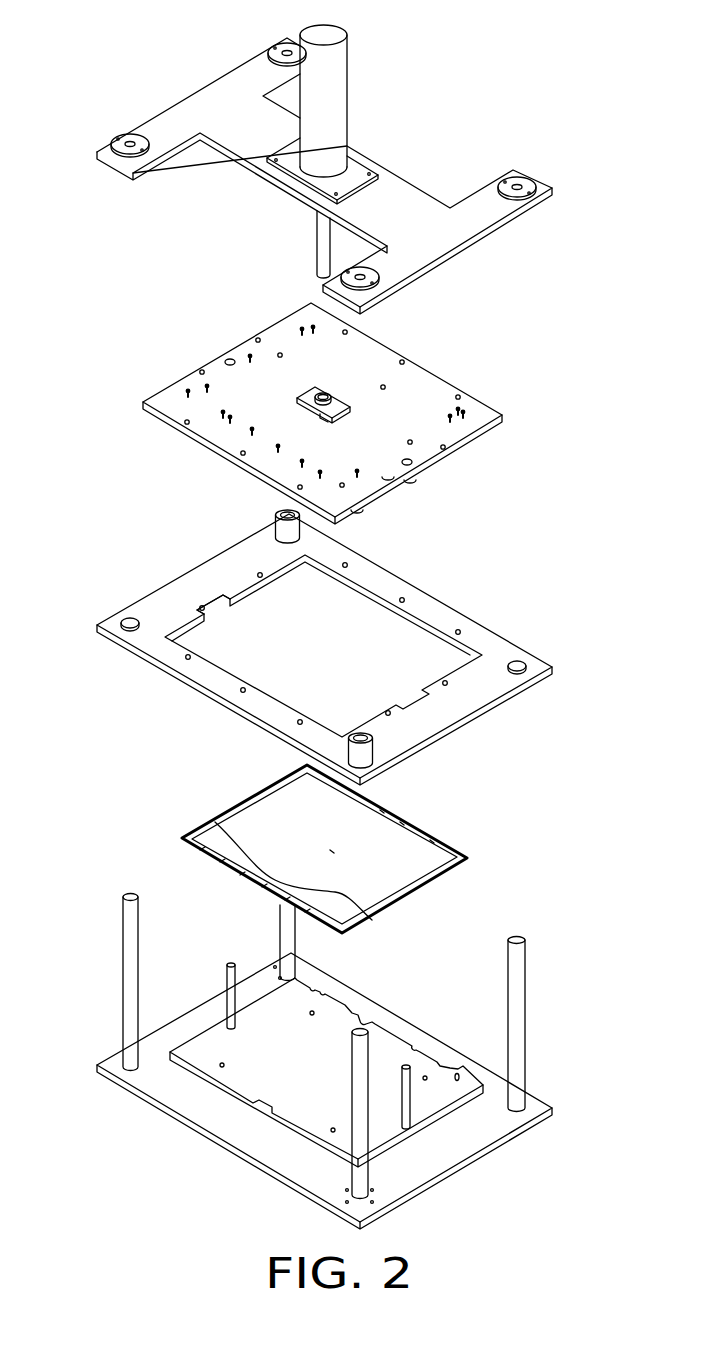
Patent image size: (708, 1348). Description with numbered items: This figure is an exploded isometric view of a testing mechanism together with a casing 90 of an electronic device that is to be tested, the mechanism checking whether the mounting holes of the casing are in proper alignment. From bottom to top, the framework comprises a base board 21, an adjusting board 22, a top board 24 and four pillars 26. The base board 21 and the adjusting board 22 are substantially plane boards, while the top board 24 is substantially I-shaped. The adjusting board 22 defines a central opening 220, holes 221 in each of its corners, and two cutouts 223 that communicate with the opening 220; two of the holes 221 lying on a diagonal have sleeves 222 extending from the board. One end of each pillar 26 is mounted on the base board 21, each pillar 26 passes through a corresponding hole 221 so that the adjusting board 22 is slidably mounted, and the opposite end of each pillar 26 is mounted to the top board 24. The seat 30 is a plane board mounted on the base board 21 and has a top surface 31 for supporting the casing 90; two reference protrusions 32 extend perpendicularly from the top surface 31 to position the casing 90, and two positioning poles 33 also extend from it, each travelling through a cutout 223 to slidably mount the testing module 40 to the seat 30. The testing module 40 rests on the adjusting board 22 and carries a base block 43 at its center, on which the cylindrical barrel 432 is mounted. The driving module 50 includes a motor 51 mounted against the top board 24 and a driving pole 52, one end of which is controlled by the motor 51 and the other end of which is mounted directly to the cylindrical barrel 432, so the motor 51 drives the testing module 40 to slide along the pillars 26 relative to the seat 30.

The base board 21 is at (150, 1077).
The adjusting board 22 is at (284, 625).
The top board 24 is at (203, 110).
The pillars 26 is at (518, 987).
The seat 30 is at (343, 1096).
The top surface 31 is at (298, 1117).
The reference protrusions 32 is at (457, 1077).
The positioning poles 33 is at (405, 1097).
The testing module 40 is at (318, 404).
The base block 43 is at (389, 368).
The cylindrical barrel 432 is at (330, 393).
The driving module 50 is at (394, 151).
The motor 51 is at (332, 120).
The driving pole 52 is at (323, 240).
The casing 90 is at (415, 857).
The opening 220 is at (402, 645).
The holes 221 is at (127, 622).
The sleeves 222 is at (285, 528).
The cutouts 223 is at (223, 603).